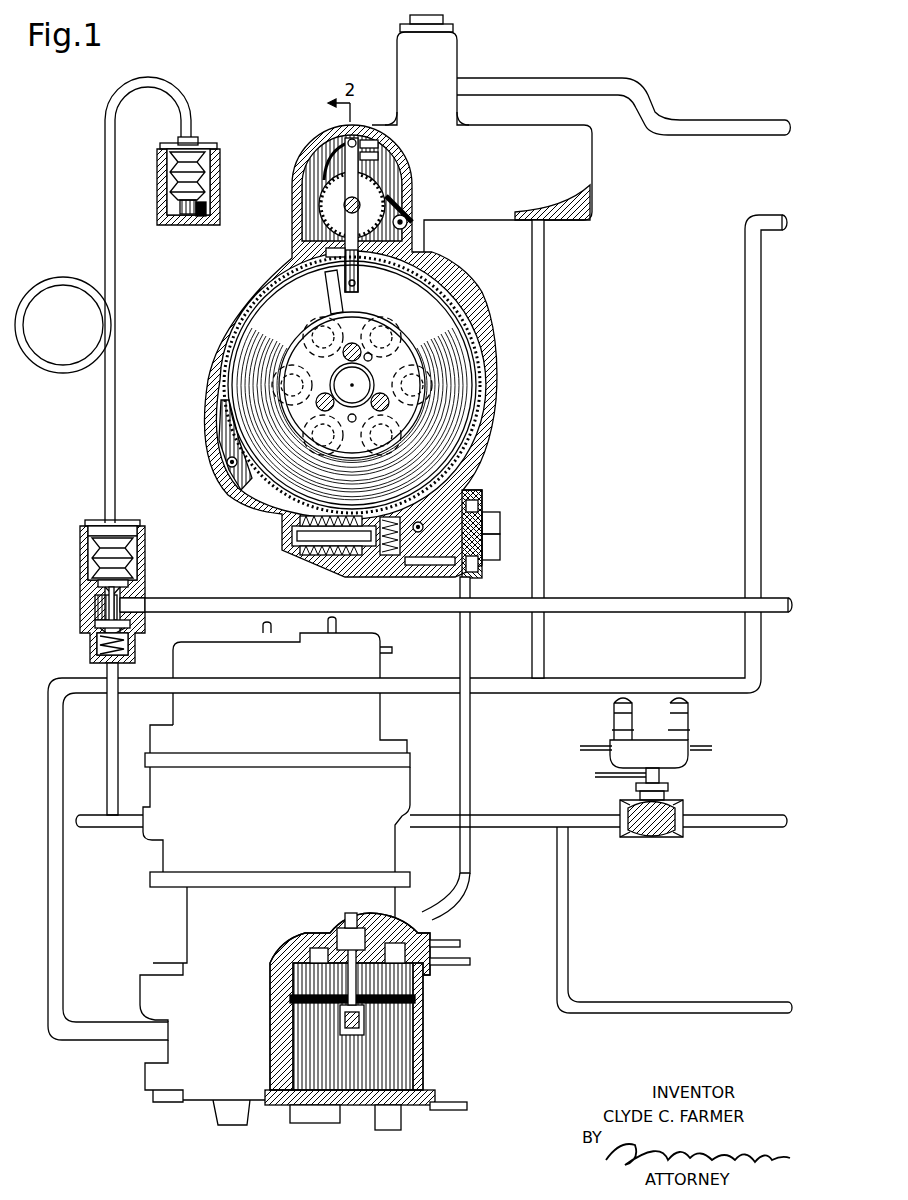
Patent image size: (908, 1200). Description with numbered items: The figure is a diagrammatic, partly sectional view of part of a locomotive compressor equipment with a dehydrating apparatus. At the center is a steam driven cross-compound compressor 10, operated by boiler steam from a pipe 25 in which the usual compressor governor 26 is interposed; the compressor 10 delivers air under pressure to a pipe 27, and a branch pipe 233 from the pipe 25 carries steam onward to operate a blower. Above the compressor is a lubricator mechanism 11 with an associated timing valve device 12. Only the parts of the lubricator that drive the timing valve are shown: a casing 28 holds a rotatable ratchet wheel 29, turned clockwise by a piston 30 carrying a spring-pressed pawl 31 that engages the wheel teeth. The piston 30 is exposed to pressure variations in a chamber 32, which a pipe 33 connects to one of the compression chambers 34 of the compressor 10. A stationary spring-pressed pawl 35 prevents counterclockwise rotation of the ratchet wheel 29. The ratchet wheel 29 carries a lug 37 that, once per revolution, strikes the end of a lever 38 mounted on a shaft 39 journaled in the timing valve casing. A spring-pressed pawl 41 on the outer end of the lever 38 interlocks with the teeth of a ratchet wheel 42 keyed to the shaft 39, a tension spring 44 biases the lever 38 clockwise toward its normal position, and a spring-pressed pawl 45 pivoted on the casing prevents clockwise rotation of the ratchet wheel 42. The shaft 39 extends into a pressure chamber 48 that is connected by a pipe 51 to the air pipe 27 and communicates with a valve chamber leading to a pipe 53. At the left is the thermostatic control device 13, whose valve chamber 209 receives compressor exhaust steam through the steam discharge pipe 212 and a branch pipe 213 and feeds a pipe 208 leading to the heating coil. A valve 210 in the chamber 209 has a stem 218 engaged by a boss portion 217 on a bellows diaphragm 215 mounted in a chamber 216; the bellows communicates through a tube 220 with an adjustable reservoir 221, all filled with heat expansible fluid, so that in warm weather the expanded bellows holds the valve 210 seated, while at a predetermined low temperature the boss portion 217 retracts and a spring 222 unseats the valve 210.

The compressor 10 is at (152, 846).
The lubricator mechanism 11 is at (280, 522).
The timing valve device 12 is at (300, 140).
The thermostatic control device 13 is at (109, 579).
The pipe 25 is at (580, 815).
The compressor governor 26 is at (672, 792).
The pipe 27 is at (420, 688).
The casing 28 is at (212, 450).
The ratchet wheel 29 is at (366, 385).
The piston 30 is at (483, 500).
The spring-pressed pawl 31 is at (380, 500).
The chamber 32 is at (484, 565).
The pipe 33 is at (468, 765).
The compression chamber 34 is at (415, 1000).
The stationary spring-pressed pawl 35 is at (216, 422).
The lug 37 is at (322, 292).
The lever 38 is at (348, 228).
The shaft 39 is at (340, 198).
The spring-pressed pawl 41 is at (322, 160).
The ratchet wheel 42 is at (382, 200).
The tension spring 44 is at (328, 252).
The spring-pressed pawl 45 is at (404, 212).
The pressure chamber 48 is at (583, 205).
The pipe 51 is at (540, 300).
The pipe 53 is at (703, 130).
The pipe 208 is at (635, 605).
The valve chamber 209 is at (142, 600).
The valve 210 is at (92, 628).
The steam discharge pipe 212 is at (130, 828).
The branch pipe 213 is at (112, 728).
The bellows diaphragm 215 is at (95, 546).
The chamber 216 is at (143, 558).
The boss portion 217 is at (95, 583).
The stem 218 is at (93, 607).
The tube 220 is at (105, 414).
The adjustable reservoir 221 is at (162, 175).
The spring 222 is at (95, 650).
The branch pipe 233 is at (680, 1010).